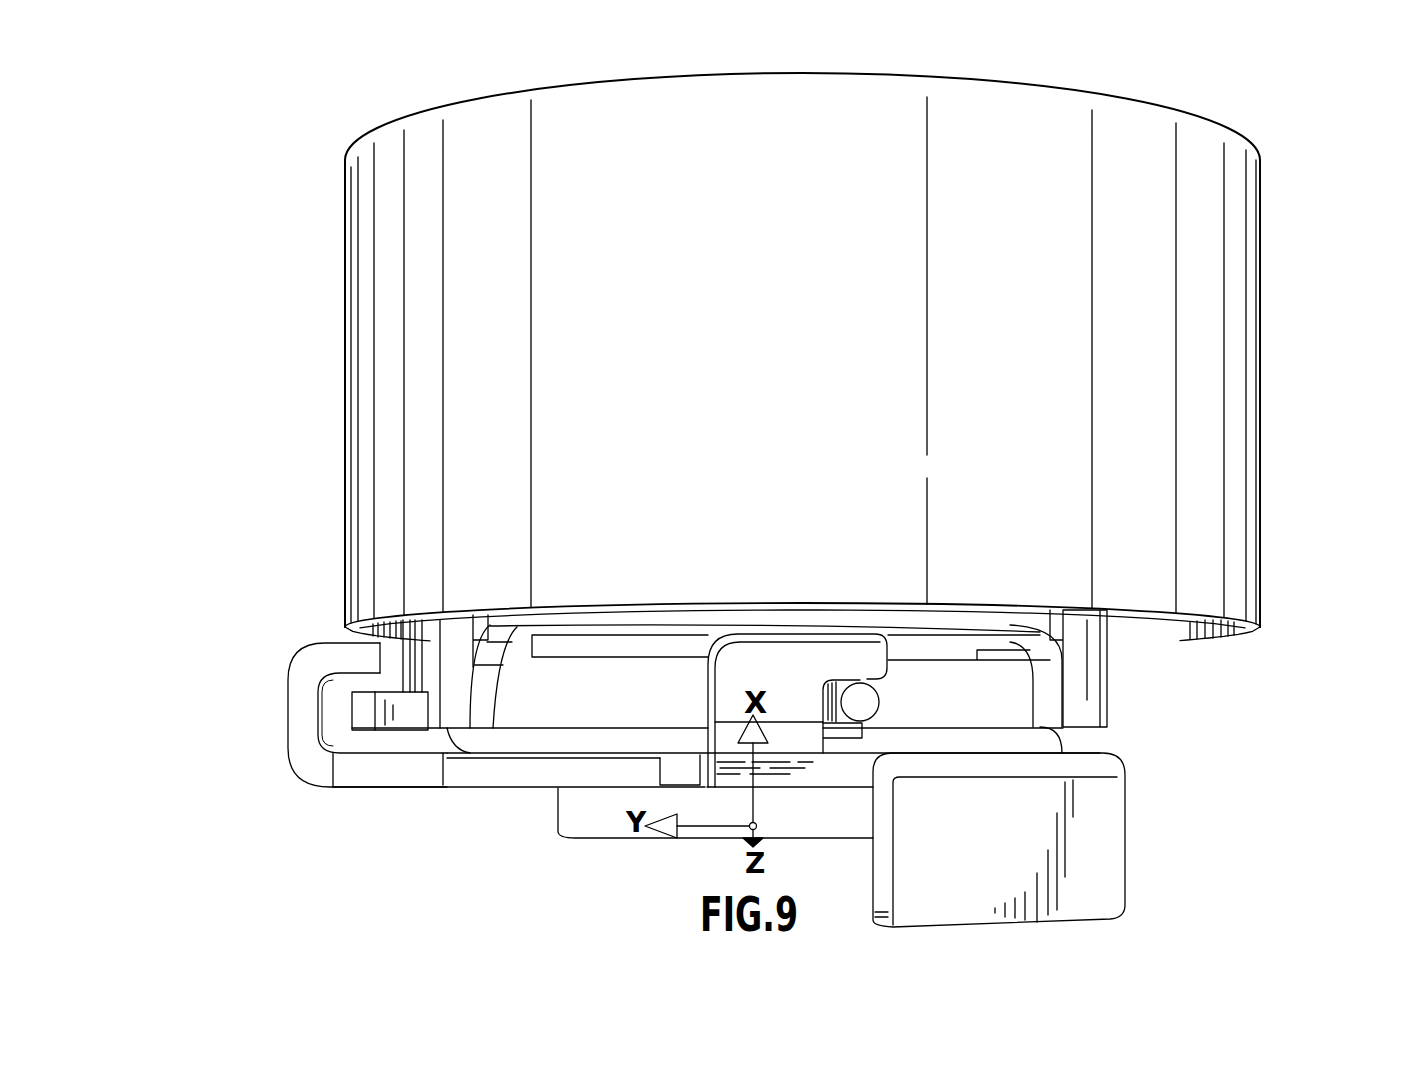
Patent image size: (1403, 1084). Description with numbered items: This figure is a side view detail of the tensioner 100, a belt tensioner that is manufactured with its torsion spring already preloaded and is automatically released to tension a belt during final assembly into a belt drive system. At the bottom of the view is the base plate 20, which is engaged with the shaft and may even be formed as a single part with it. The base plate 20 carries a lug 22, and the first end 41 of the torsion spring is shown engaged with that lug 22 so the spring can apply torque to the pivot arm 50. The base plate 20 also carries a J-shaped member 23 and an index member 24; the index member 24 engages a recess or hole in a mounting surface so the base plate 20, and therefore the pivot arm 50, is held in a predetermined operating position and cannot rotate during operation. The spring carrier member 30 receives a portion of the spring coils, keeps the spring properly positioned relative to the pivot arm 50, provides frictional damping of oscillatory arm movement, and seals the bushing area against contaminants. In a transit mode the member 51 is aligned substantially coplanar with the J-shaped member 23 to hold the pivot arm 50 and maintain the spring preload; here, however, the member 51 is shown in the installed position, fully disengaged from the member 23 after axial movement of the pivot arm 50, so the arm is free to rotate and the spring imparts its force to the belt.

The tensioner 100 is at (1263, 578).
The "J" shaped member 23 is at (288, 712).
The member 51 is at (378, 732).
The base plate 20 is at (1080, 745).
The spring carrier member 30 is at (1015, 706).
The pivot arm 50 is at (1108, 687).
The lug 22 is at (888, 670).
The first end of torsion spring 41 is at (880, 703).
The index member 24 is at (1100, 860).